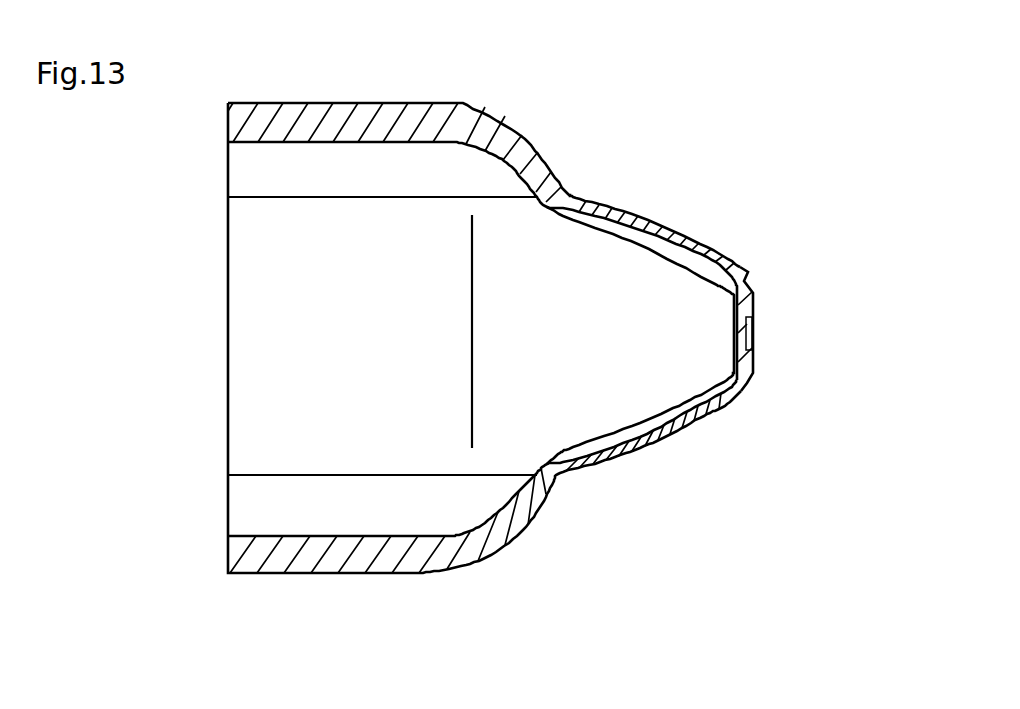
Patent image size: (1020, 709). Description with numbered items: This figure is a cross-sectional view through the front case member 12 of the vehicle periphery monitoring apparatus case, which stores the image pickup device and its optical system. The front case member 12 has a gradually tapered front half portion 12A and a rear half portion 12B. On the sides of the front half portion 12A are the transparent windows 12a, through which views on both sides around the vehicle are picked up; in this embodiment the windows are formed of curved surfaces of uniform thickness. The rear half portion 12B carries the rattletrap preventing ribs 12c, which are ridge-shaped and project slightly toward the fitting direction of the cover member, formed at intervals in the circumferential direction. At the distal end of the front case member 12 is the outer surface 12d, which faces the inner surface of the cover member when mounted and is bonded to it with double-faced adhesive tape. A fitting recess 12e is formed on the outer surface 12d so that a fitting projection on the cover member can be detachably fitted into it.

The front case member 12 is at (228, 108).
The transparent windows 12a is at (620, 205).
The front half portion 12A is at (702, 247).
The rear half portion 12B is at (415, 103).
The rattletrap preventing ribs 12c is at (268, 103).
The outer surface 12d is at (757, 290).
The fitting recess 12e is at (755, 338).